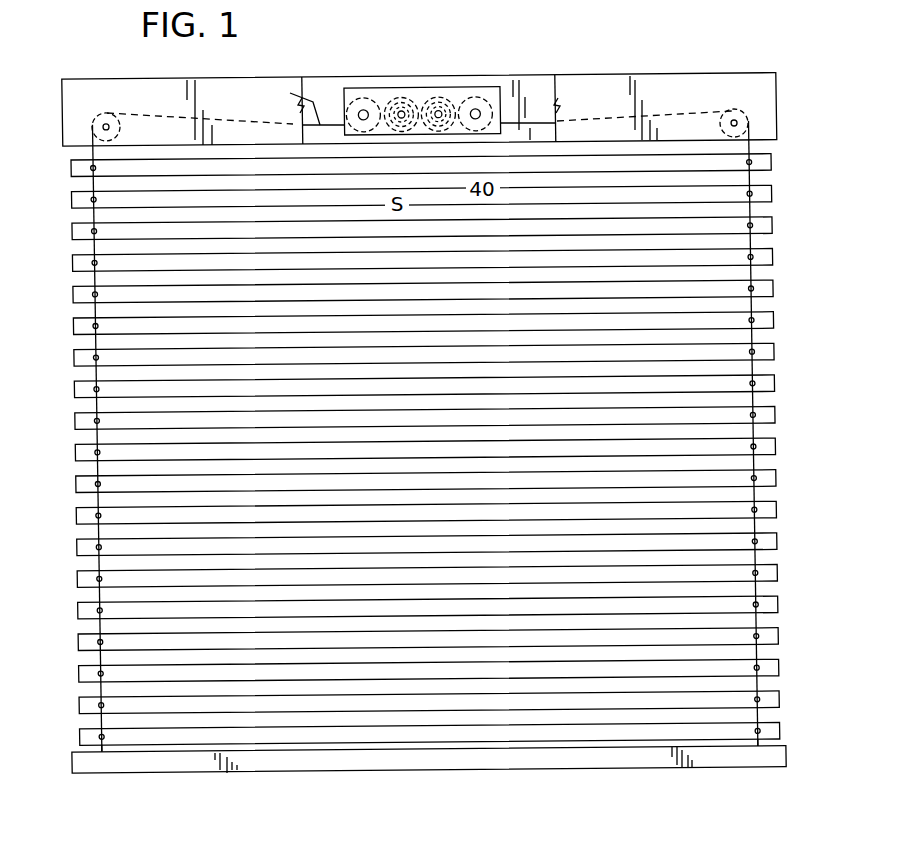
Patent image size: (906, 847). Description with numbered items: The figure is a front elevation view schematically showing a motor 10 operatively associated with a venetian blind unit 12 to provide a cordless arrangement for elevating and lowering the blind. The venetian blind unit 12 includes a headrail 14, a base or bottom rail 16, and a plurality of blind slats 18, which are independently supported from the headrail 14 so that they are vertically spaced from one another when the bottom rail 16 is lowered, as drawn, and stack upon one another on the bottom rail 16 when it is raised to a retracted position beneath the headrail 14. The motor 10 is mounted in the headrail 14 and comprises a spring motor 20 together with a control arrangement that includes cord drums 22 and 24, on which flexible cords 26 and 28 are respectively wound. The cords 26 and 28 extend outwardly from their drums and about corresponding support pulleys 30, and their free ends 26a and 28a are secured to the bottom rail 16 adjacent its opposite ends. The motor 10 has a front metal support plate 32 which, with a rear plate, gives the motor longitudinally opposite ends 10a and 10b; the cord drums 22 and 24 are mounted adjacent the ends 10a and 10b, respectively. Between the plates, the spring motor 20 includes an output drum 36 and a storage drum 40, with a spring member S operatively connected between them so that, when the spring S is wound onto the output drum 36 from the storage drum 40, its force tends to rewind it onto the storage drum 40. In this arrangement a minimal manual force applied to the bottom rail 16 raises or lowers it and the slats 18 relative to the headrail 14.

The motor 10 is at (323, 81).
The longitudinally opposite end of motor 10a is at (500, 88).
The longitudinally opposite end of motor 10b is at (343, 90).
The venetian blind unit 12 is at (425, 440).
The headrail 14 is at (712, 83).
The base or bottom rail 16 is at (426, 763).
The blind slats 18 is at (78, 292).
The spring motor 20 is at (423, 90).
The cord drum 22 is at (487, 88).
The cord drum 24 is at (360, 93).
The flexible cord 26 is at (525, 122).
The free end of cord 26a is at (759, 741).
The flexible cord 28 is at (290, 93).
The free end of cord 28a is at (102, 746).
The support pulleys 30 is at (103, 115).
The front metal support plate 32 is at (456, 93).
The output drum 36 is at (397, 97).
The storage drum 40 is at (447, 137).
The spring member S is at (403, 137).